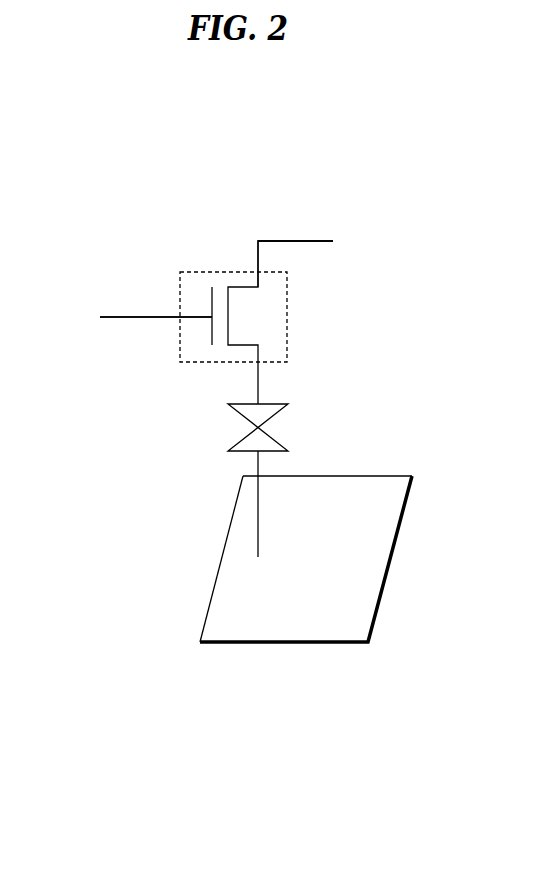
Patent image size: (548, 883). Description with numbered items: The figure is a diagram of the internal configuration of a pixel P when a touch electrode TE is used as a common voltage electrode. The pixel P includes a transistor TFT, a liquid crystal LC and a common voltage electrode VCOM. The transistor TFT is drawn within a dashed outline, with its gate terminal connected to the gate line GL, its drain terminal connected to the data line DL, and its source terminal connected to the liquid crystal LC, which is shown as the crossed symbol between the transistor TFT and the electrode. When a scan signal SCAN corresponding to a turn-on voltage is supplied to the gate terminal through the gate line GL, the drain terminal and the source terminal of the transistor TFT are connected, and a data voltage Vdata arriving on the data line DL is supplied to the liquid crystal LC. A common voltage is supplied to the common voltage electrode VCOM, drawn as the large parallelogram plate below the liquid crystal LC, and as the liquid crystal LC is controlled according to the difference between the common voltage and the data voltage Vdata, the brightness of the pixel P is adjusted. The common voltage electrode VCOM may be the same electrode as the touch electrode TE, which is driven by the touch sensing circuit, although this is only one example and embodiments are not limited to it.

The pixel P is at (84, 153).
The transistor TFT is at (188, 272).
The data line DL is at (305, 241).
The data voltage Vdata is at (323, 239).
The scan signal SCAN is at (128, 317).
The gate line GL is at (128, 318).
The liquid crystal LC is at (235, 455).
The touch electrode TE is at (305, 645).
The common voltage electrode VCOM is at (310, 566).